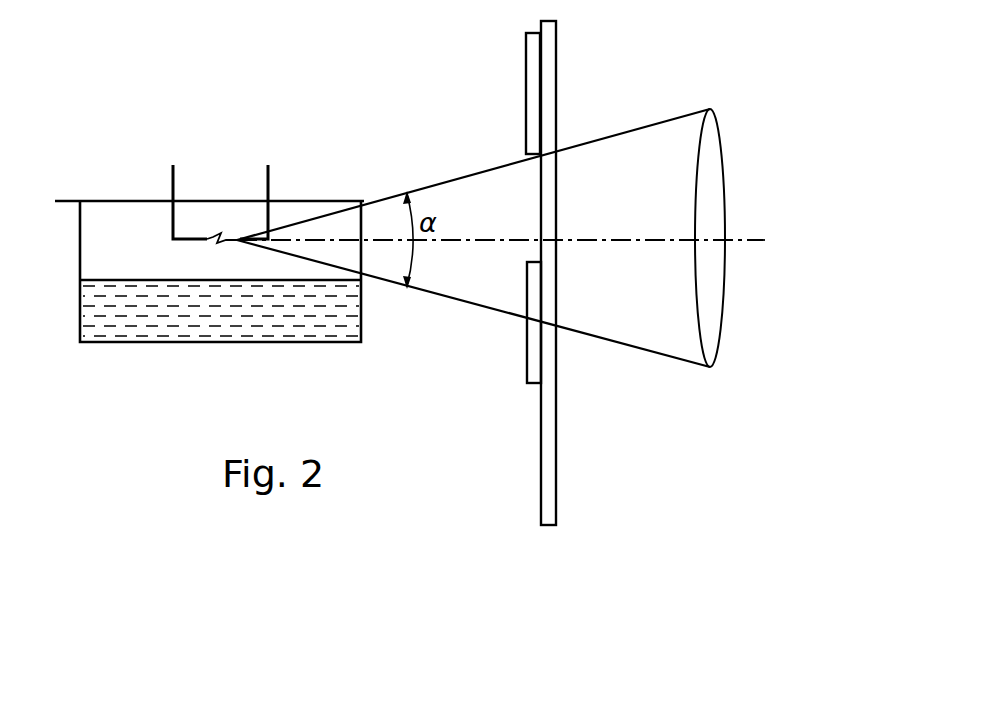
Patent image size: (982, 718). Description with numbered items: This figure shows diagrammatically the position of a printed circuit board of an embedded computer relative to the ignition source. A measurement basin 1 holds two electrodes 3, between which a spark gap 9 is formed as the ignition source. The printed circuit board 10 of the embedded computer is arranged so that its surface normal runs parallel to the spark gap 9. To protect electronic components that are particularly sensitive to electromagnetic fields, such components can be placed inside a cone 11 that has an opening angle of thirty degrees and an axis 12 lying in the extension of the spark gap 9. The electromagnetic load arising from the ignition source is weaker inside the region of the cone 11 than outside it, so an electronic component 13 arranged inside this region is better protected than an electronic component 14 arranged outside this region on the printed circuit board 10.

The measurement basin 1 is at (102, 342).
The electrodes 3 is at (170, 173).
The spark gap 9 is at (217, 233).
The printed circuit board 10 is at (548, 43).
The cone 11 is at (458, 175).
The axis 12 is at (633, 238).
The electronic component 13 is at (535, 295).
The electronic component 14 is at (534, 55).